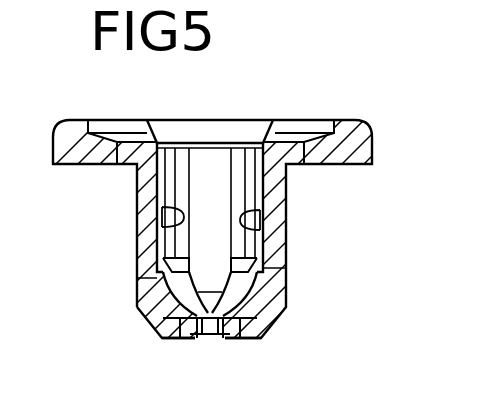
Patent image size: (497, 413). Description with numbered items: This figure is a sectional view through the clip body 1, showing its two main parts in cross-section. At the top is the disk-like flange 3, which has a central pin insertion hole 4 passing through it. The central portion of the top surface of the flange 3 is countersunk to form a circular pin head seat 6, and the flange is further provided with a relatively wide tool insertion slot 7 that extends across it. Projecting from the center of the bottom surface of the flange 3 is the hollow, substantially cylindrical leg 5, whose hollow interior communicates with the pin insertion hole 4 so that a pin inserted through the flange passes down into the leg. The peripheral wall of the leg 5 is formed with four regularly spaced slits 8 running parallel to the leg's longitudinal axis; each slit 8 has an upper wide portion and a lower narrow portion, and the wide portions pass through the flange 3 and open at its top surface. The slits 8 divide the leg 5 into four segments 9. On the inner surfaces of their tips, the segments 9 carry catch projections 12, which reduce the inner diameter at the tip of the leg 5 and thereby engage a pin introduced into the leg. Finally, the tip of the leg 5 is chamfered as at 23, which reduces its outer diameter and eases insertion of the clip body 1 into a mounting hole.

The clip body 1 is at (379, 133).
The flange 3 is at (372, 152).
The pin insertion hole 4 is at (246, 144).
The leg 5 is at (287, 197).
The pin head seat 6 is at (120, 166).
The tool insertion slot 7 is at (168, 147).
The slit 8 is at (160, 217).
The segment 9 is at (140, 277).
The catch projection 12 is at (150, 323).
The chamfer 23 is at (270, 336).